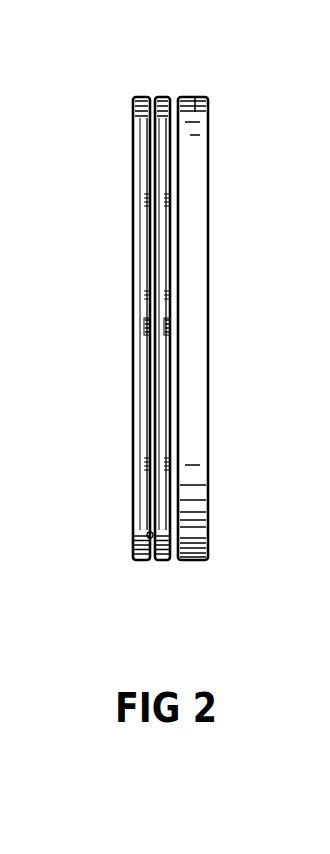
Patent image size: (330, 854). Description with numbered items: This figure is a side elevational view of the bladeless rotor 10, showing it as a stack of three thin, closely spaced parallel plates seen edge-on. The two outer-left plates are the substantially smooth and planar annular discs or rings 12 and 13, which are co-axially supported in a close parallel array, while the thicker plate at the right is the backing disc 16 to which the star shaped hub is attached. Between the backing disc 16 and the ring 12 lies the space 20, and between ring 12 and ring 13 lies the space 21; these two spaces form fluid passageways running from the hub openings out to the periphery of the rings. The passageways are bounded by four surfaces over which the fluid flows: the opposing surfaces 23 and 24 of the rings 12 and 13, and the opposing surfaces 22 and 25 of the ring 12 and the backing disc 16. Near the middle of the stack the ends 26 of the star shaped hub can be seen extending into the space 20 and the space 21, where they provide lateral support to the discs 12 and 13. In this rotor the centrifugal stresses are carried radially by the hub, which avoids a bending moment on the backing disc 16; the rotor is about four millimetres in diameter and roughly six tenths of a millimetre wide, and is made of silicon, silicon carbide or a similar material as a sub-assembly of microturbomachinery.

The bladeless rotor 10 is at (238, 228).
The annular disc or ring 12 is at (162, 97).
The annular disc or ring 13 is at (142, 97).
The backing disc 16 is at (200, 97).
The space 20 is at (172, 562).
The space 21 is at (153, 562).
The surface 22 is at (170, 500).
The surface 23 is at (163, 512).
The surface 24 is at (137, 530).
The surface 25 is at (208, 545).
The ends of star shaped hub 26 is at (145, 337).